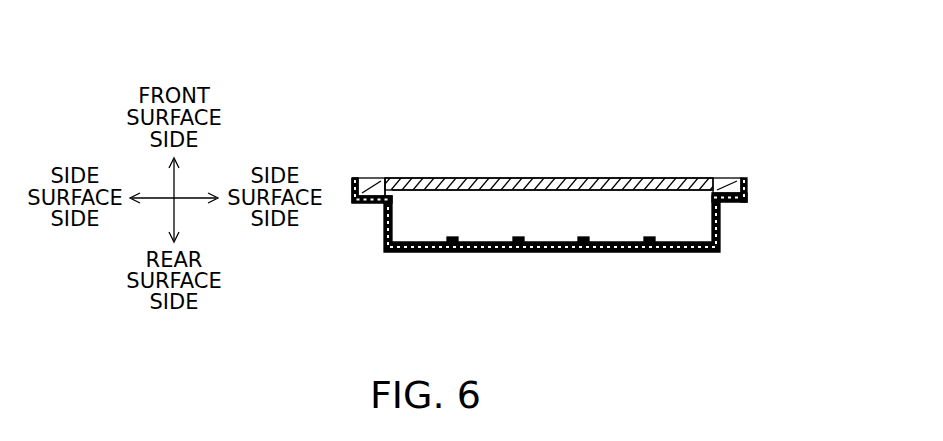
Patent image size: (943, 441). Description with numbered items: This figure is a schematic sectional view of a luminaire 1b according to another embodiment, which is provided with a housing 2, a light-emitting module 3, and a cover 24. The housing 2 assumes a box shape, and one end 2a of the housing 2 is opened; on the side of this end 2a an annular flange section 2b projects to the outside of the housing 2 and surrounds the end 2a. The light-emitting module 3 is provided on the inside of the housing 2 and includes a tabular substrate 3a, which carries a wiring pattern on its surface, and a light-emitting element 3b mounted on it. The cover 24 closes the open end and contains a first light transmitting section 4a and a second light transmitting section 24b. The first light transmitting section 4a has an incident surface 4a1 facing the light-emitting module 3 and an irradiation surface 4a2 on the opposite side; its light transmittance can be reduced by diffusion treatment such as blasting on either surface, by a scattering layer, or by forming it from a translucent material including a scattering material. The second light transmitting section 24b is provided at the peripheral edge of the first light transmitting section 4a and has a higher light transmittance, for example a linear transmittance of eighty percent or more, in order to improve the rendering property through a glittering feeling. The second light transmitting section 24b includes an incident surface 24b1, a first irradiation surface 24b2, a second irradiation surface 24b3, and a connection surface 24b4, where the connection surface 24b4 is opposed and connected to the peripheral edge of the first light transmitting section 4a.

The luminaire 1b is at (739, 80).
The housing 2 is at (721, 256).
The end 2a is at (748, 177).
The flange section 2b is at (738, 201).
The light-emitting module 3 is at (551, 307).
The substrate 3a is at (551, 252).
The light-emitting element 3b is at (583, 252).
The first light transmitting section 4a is at (463, 177).
The incident surface 4a1 is at (674, 191).
The irradiation surface 4a2 is at (645, 177).
The cover 24 is at (498, 71).
The second light transmitting section 24b is at (370, 178).
The incident surface 24b1 is at (391, 184).
The first irradiation surface 24b2 is at (360, 177).
The second irradiation surface 24b3 is at (350, 188).
The connection surface 24b4 is at (392, 190).